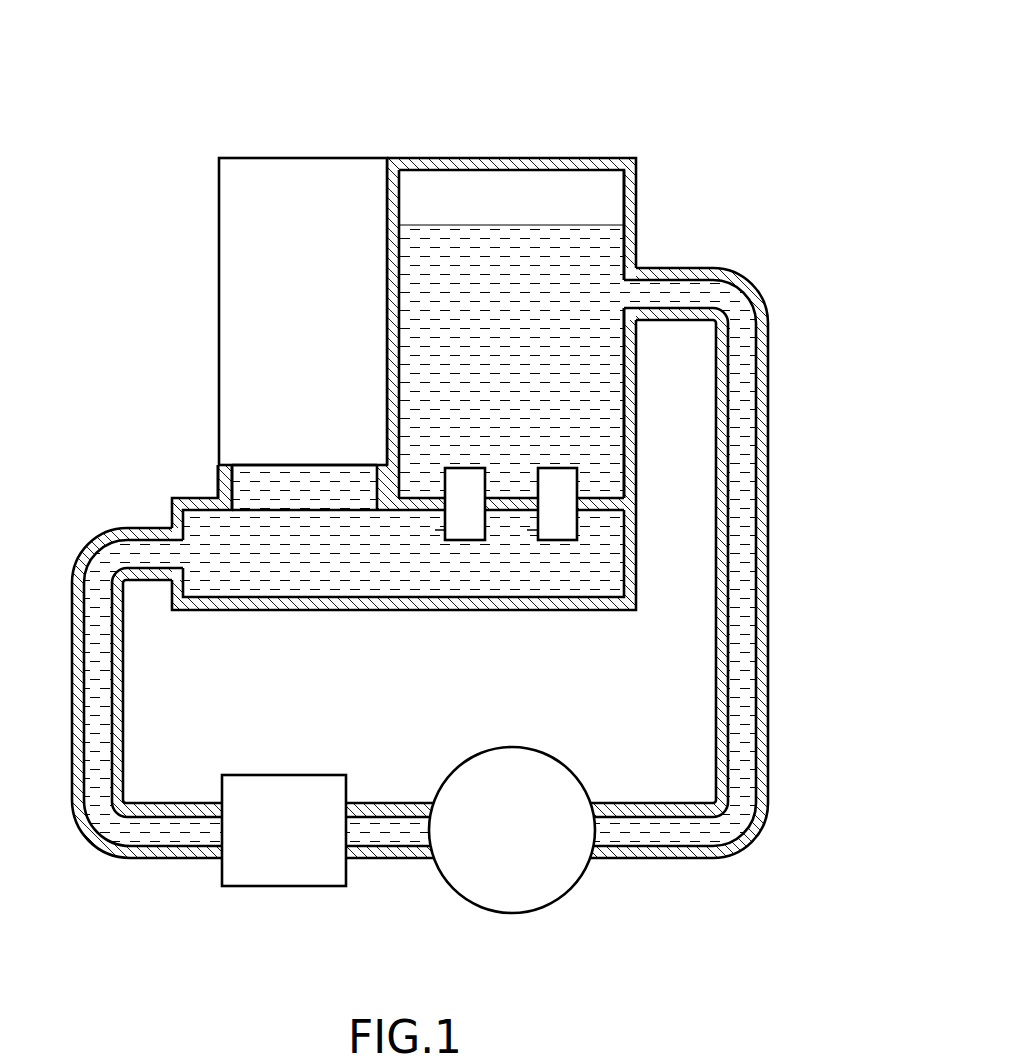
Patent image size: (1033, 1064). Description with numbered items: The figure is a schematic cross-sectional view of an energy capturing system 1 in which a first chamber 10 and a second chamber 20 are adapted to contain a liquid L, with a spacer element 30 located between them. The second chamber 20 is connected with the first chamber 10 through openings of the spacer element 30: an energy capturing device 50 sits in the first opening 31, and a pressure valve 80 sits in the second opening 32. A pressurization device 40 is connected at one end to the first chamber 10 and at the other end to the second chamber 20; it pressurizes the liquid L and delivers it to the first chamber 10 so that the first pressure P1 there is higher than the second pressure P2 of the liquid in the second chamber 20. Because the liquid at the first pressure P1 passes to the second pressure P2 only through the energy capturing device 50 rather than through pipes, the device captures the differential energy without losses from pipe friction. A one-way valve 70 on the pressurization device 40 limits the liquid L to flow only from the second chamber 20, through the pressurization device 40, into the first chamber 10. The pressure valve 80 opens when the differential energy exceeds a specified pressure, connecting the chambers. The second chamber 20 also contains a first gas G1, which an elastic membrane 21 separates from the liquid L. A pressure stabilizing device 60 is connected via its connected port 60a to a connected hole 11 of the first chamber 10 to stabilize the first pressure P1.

The energy capturing system 1 is at (751, 33).
The first chamber 10 is at (398, 494).
The connected hole 11 is at (262, 480).
The second chamber 20 is at (506, 302).
The elastic membrane 21 is at (583, 225).
The spacer element 30 is at (600, 508).
The first opening 31 is at (480, 505).
The second opening 32 is at (575, 505).
The pressurization device 40 is at (513, 890).
The energy capturing device 50 is at (444, 530).
The pressure stabilizing device 60 is at (262, 282).
The connected port 60a is at (283, 470).
The one-way valve 70 is at (283, 858).
The pressure valve 80 is at (533, 530).
The first gas G1 is at (476, 198).
The liquid L is at (605, 381).
The first pressure P1 is at (273, 580).
The second pressure P2 is at (607, 241).